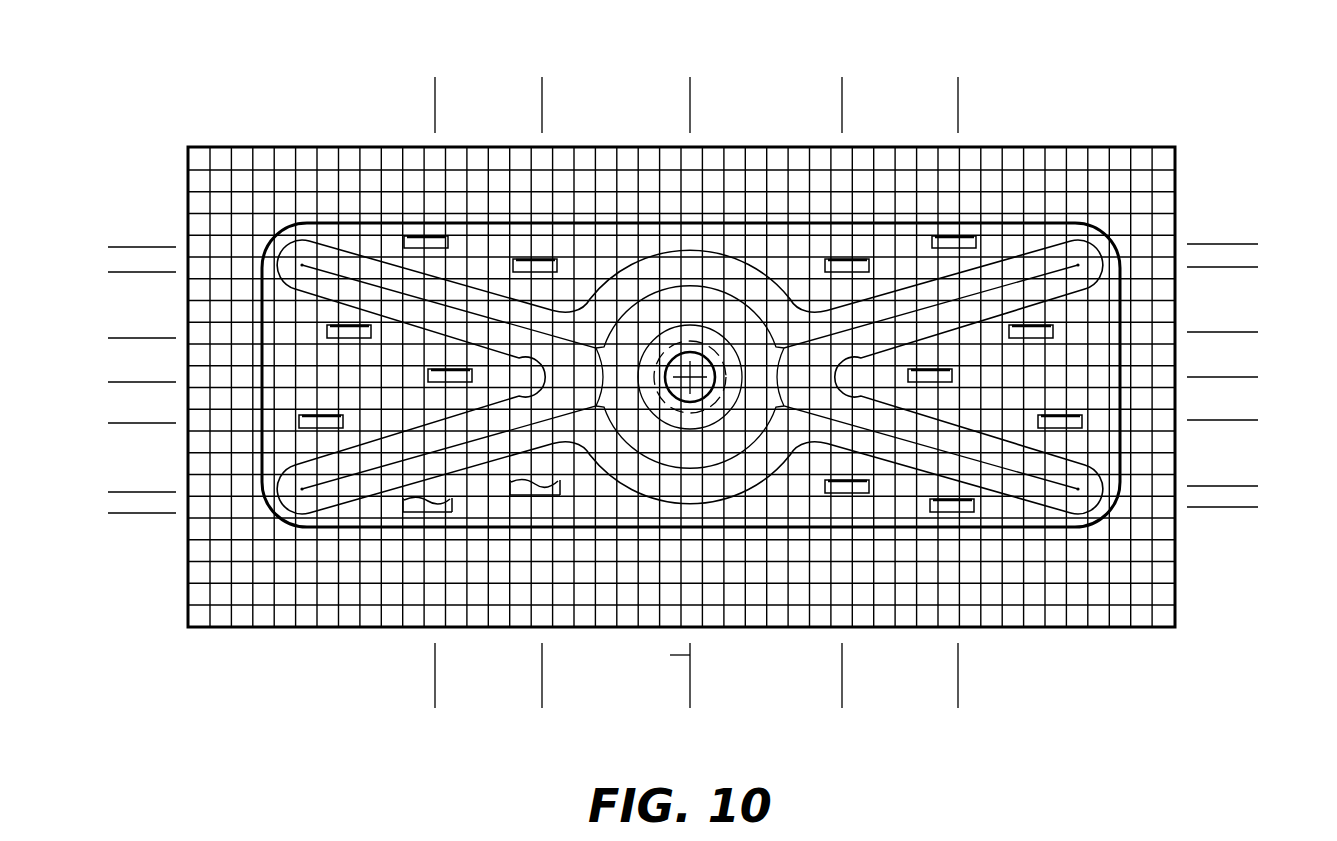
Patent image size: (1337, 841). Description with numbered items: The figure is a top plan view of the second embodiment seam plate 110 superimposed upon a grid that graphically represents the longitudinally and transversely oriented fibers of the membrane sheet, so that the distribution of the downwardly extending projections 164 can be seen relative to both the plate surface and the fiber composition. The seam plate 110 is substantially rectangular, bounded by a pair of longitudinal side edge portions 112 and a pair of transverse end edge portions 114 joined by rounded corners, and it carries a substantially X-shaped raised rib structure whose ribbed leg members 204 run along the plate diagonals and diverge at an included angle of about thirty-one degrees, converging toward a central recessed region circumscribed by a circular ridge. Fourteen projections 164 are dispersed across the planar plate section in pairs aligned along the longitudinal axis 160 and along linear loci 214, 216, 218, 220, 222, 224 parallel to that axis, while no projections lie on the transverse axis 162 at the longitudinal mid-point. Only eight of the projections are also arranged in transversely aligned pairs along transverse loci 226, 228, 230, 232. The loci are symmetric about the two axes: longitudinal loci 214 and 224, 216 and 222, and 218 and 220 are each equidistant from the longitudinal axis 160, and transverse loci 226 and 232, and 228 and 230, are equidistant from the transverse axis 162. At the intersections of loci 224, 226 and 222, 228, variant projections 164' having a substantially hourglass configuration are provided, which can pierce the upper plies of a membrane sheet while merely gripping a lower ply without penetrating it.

The seam plate 110 is at (1226, 157).
The longitudinal side edge portion 112 is at (740, 222).
The transverse end edge portion 114 is at (263, 358).
The longitudinal axis 160 is at (1233, 377).
The transverse axis 162 is at (672, 655).
The projection 164 is at (690, 384).
The hourglass projection 164' is at (448, 583).
The ribbed leg member 204 is at (347, 268).
The longitudinal locus 214 is at (135, 246).
The longitudinal locus 216 is at (113, 271).
The longitudinal locus 218 is at (140, 337).
The longitudinal locus 220 is at (130, 423).
The longitudinal locus 222 is at (157, 491).
The longitudinal locus 224 is at (133, 514).
The transverse locus 226 is at (433, 100).
The transverse locus 228 is at (542, 112).
The transverse locus 230 is at (840, 103).
The transverse locus 232 is at (957, 98).